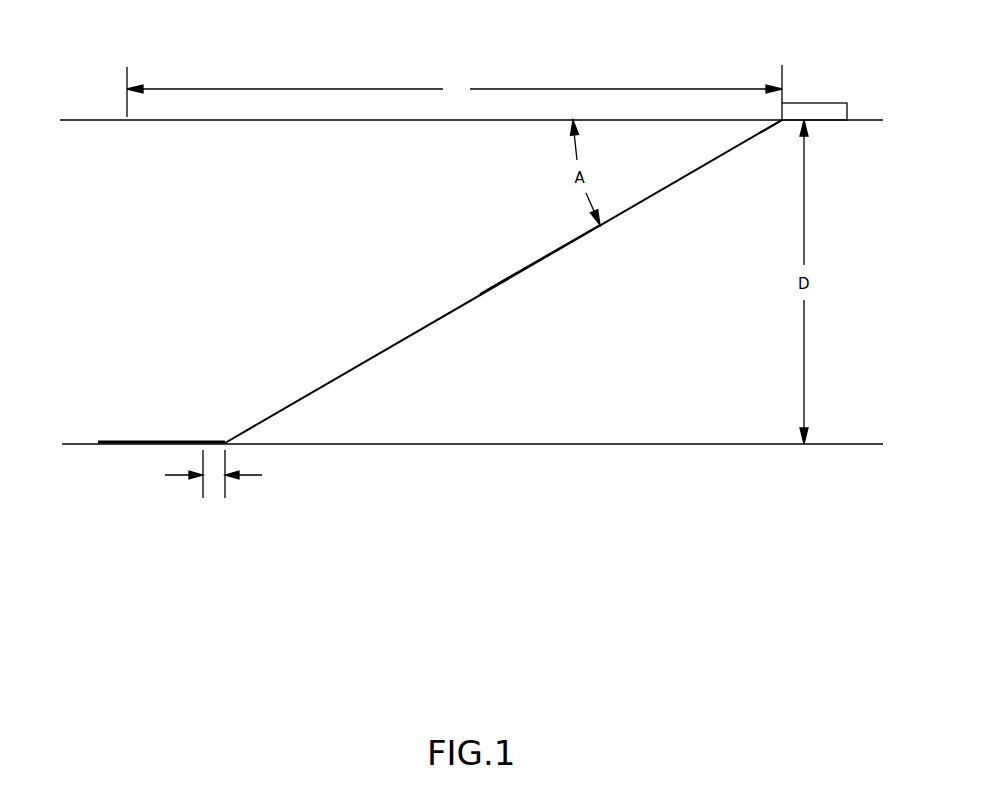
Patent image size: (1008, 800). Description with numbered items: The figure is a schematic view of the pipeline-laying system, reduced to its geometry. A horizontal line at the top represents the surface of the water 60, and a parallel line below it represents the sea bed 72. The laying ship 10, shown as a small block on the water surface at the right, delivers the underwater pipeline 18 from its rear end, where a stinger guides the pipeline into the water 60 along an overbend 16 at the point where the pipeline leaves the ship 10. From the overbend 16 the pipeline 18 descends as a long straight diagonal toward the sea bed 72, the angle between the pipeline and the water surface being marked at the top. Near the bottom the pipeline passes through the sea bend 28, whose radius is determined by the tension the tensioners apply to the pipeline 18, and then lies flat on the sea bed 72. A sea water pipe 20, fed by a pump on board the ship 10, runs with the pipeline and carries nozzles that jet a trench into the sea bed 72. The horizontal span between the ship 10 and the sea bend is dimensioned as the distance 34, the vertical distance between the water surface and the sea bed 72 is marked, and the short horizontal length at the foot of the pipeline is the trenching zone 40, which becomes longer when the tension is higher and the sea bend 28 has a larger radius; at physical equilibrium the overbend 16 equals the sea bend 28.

The laying ship 10 is at (818, 103).
The overbend 16 is at (783, 122).
The underwater pipeline 18 is at (537, 262).
The sea water pipe 20 is at (497, 285).
The sea bend 28 is at (225, 441).
The horizontal extent dimension B 34 is at (470, 70).
The trenching zone 40 is at (306, 473).
The water 60 is at (258, 121).
The sea bed 72 is at (552, 443).